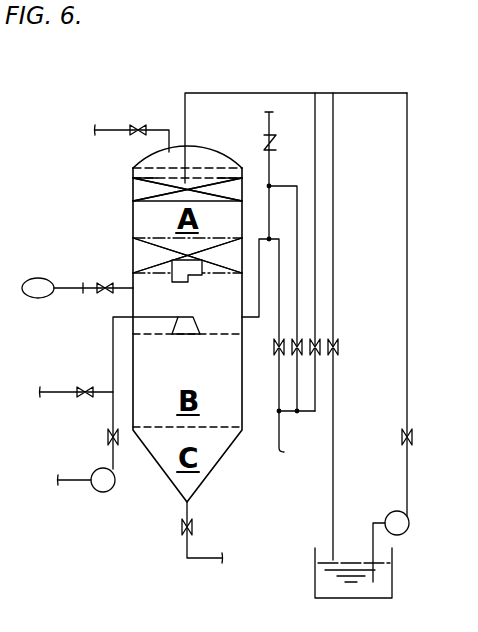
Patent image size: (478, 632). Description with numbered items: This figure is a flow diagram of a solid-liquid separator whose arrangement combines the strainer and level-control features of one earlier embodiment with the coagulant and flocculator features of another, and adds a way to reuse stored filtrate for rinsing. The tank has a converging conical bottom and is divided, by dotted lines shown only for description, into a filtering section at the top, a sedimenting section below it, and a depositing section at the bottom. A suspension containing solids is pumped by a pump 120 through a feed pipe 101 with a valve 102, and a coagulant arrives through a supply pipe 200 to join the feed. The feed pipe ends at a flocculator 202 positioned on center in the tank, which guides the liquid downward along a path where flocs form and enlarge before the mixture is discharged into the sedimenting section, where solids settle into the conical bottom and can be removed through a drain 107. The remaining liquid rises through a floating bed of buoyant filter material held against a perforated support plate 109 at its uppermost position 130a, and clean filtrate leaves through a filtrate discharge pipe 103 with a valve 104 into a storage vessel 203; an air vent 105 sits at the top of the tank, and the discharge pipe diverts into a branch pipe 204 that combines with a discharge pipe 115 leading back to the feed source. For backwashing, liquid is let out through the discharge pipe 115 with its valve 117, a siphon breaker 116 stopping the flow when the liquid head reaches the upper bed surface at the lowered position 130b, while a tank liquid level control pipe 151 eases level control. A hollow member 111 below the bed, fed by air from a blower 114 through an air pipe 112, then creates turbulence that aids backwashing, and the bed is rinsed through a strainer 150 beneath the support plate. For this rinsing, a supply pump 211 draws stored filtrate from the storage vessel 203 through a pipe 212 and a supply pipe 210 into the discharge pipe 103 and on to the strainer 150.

The feed pipe 101 is at (110, 318).
The valve 102 is at (105, 437).
The filtrate discharge pipe 103 is at (246, 93).
The valve 104 is at (338, 347).
The air vent 105 is at (110, 128).
The drain 107 is at (180, 527).
The perforated support plate 109 is at (175, 168).
The hollow member 111 is at (190, 281).
The air pipe 112 is at (72, 287).
The blower 114 is at (38, 278).
The discharge pipe 115 is at (254, 322).
The siphon breaker 116 is at (264, 140).
The valve 117 is at (297, 405).
The pump 120 is at (103, 492).
The filter bed uppermost position 130a is at (150, 190).
The filter bed lowered position 130b is at (143, 250).
The strainer 150 is at (155, 173).
The tank liquid level control pipe 151 is at (283, 182).
The supply pipe 200 is at (62, 370).
The flocculator 202 is at (182, 334).
The storage vessel 203 is at (315, 582).
The branch pipe 204 is at (313, 127).
The supply pipe 210 is at (407, 177).
The supply pump 211 is at (386, 517).
The pipe 212 is at (400, 437).